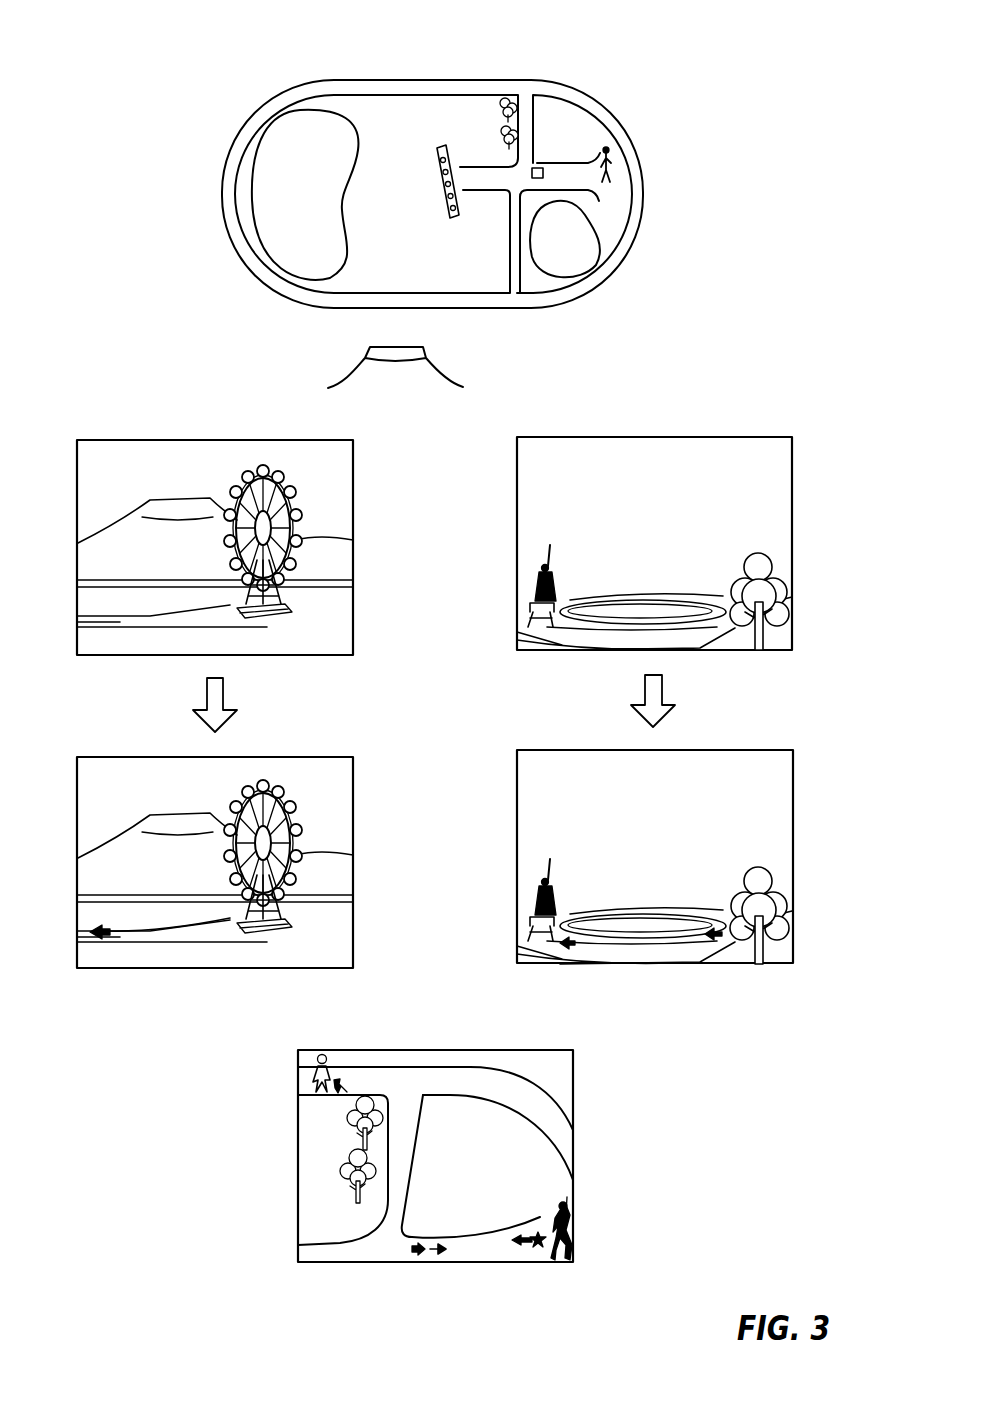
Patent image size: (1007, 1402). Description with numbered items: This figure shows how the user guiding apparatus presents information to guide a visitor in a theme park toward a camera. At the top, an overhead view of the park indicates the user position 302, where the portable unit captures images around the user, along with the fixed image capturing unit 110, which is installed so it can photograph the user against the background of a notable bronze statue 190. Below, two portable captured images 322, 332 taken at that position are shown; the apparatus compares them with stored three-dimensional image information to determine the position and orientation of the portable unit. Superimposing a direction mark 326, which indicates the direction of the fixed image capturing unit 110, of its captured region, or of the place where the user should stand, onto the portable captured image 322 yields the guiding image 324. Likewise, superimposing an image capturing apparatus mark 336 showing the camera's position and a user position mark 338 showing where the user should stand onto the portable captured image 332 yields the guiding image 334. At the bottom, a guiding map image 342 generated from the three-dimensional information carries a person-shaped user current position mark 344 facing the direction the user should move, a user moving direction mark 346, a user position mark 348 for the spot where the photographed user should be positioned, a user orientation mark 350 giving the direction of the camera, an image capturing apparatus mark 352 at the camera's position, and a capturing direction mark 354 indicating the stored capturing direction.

The user position 302 is at (469, 165).
The fixed image capturing unit 110 is at (541, 167).
The bronze statue 190 is at (613, 153).
The portable captured image 322 is at (353, 480).
The portable captured image 332 is at (792, 477).
The guiding image 324 is at (253, 894).
The guiding image 334 is at (693, 889).
The direction mark 326 is at (105, 940).
The image capturing apparatus mark 336 is at (728, 945).
The user position mark 338 is at (547, 953).
The guiding map image 342 is at (437, 1201).
The user current position mark 344 is at (298, 1062).
The user moving direction mark 346 is at (333, 1084).
The user position mark 348 is at (538, 1256).
The user orientation mark 350 is at (522, 1248).
The image capturing apparatus mark 352 is at (415, 1262).
The capturing direction mark 354 is at (435, 1258).